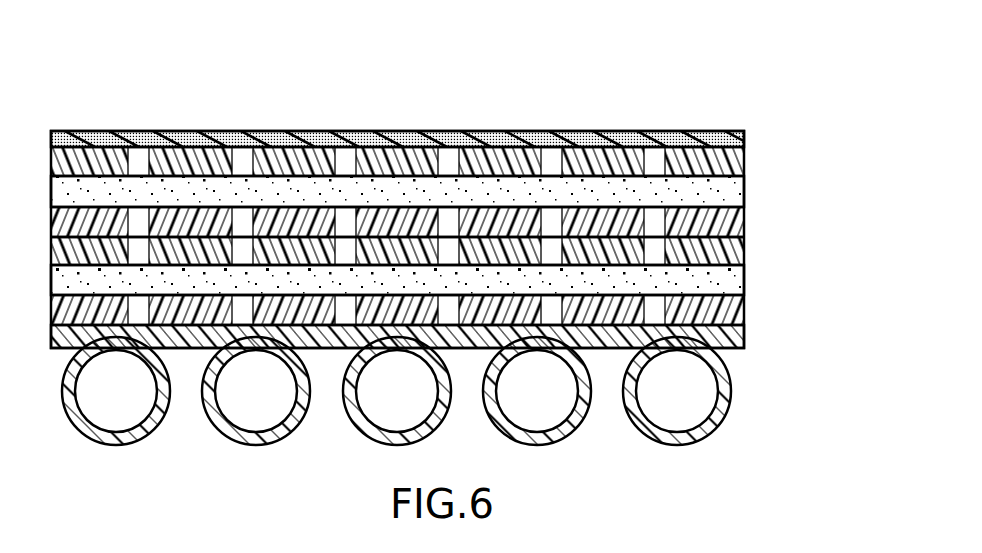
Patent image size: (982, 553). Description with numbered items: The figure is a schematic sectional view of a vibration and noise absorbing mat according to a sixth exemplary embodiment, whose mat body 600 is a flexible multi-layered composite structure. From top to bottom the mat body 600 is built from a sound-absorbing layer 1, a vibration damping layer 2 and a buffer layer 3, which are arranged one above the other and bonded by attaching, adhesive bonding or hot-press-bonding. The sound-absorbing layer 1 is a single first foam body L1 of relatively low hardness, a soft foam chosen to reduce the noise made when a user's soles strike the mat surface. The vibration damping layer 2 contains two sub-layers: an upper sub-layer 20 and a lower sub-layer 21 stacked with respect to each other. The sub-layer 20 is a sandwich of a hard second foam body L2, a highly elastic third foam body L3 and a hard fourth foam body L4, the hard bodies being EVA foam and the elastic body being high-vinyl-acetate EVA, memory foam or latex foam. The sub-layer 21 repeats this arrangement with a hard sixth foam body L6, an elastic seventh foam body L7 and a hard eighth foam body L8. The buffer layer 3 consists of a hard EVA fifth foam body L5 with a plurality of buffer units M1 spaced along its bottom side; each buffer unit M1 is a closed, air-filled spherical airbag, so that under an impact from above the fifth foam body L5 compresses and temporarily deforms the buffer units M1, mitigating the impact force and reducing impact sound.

The mat body 600 is at (408, 98).
The sound-absorbing layer 1 is at (414, 136).
The vibration damping layer 2 is at (443, 236).
The buffer layer 3 is at (414, 385).
The first foam body L1 is at (720, 142).
The second foam body L2 is at (727, 161).
The third foam body L3 is at (727, 190).
The fourth foam body L4 is at (428, 220).
The fifth foam body L5 is at (727, 336).
The sixth foam body L6 is at (727, 251).
The seventh foam body L7 is at (727, 279).
The eighth foam body L8 is at (428, 309).
The sub-layer 20 is at (458, 192).
The sub-layer 21 is at (458, 281).
The buffer units M1 is at (733, 393).